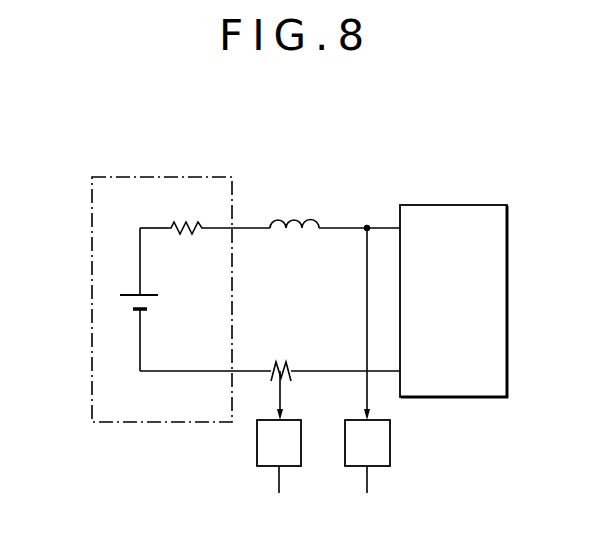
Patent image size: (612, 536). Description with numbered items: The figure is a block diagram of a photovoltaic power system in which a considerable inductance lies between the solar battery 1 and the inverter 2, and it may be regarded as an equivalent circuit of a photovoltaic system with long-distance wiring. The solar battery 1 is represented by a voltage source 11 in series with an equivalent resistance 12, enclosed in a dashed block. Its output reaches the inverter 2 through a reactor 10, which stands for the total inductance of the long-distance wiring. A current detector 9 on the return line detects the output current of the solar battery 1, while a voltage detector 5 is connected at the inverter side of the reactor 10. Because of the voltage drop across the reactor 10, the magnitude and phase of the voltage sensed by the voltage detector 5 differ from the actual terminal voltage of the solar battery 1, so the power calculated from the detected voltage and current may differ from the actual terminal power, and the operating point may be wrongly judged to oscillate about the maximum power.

The solar battery 1 is at (121, 177).
The inverter 2 is at (431, 204).
The voltage detector 5 is at (357, 419).
The current detector 9 is at (268, 419).
The reactor 10 is at (300, 221).
The voltage source 11 is at (135, 292).
The equivalent resistance 12 is at (191, 224).